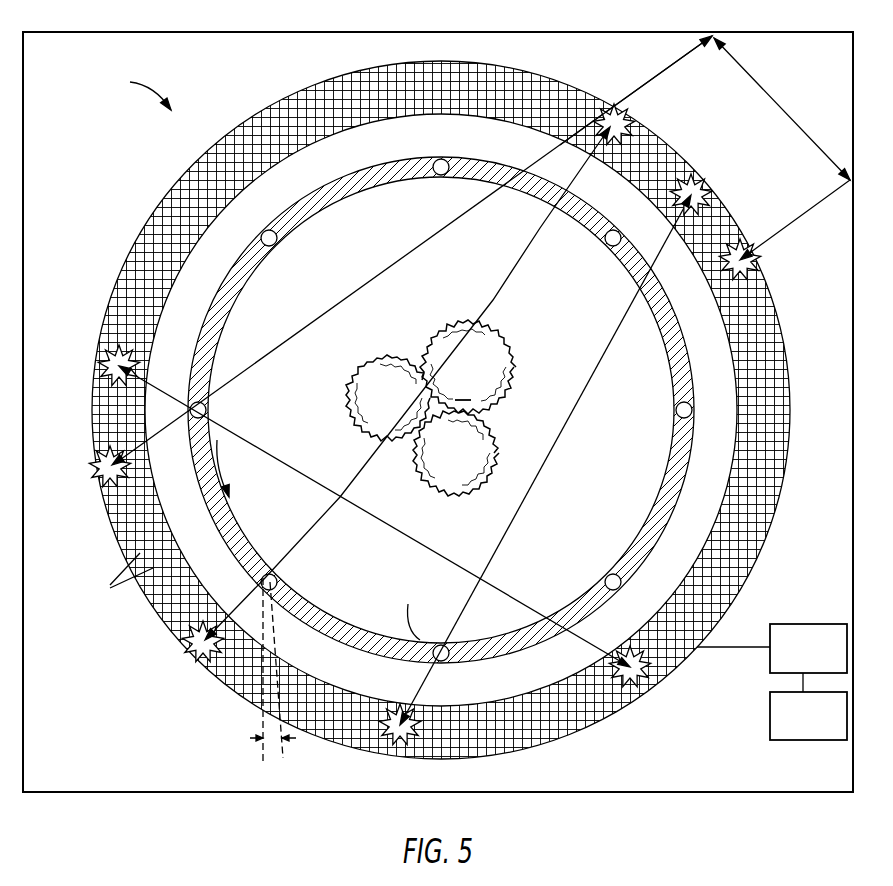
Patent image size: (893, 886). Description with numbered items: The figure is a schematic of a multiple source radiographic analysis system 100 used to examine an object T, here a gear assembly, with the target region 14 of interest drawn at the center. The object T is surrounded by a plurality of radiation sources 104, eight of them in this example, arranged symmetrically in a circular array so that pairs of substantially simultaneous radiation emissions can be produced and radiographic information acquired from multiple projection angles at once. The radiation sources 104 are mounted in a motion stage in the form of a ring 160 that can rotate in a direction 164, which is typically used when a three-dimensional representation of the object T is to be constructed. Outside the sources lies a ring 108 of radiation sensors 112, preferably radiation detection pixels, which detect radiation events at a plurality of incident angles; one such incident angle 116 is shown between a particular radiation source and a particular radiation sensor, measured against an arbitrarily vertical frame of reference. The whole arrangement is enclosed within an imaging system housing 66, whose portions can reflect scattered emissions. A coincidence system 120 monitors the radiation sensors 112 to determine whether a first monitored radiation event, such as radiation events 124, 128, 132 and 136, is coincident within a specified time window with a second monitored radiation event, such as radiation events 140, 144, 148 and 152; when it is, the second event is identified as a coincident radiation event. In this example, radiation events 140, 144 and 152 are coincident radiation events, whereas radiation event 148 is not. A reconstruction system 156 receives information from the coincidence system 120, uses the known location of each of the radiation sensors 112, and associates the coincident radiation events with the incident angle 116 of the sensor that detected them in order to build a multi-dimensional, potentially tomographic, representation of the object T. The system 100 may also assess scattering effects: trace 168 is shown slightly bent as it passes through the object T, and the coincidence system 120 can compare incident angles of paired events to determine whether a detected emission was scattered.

The target 14 is at (352, 437).
The imaging system housing 66 is at (286, 34).
The system for radiographic analysis 100 is at (131, 89).
The radiation sources 104 is at (437, 173).
The ring of radiation sensors 108 is at (143, 223).
The radiation sensors 112 is at (350, 667).
The incident angle 116 is at (263, 758).
The coincidence system 120 is at (813, 624).
The monitored radiation event 124 is at (101, 363).
The monitored radiation event 128 is at (95, 478).
The monitored radiation event 132 is at (193, 653).
The monitored radiation event 136 is at (390, 735).
The monitored radiation event 140 is at (636, 124).
The monitored radiation event 144 is at (693, 178).
The monitored radiation event 148 is at (760, 254).
The monitored radiation event 152 is at (653, 683).
The reconstruction system 156 is at (770, 710).
The ring 160 is at (410, 607).
The direction of rotation 164 is at (219, 457).
The trace 168 is at (537, 232).
The object T is at (463, 386).